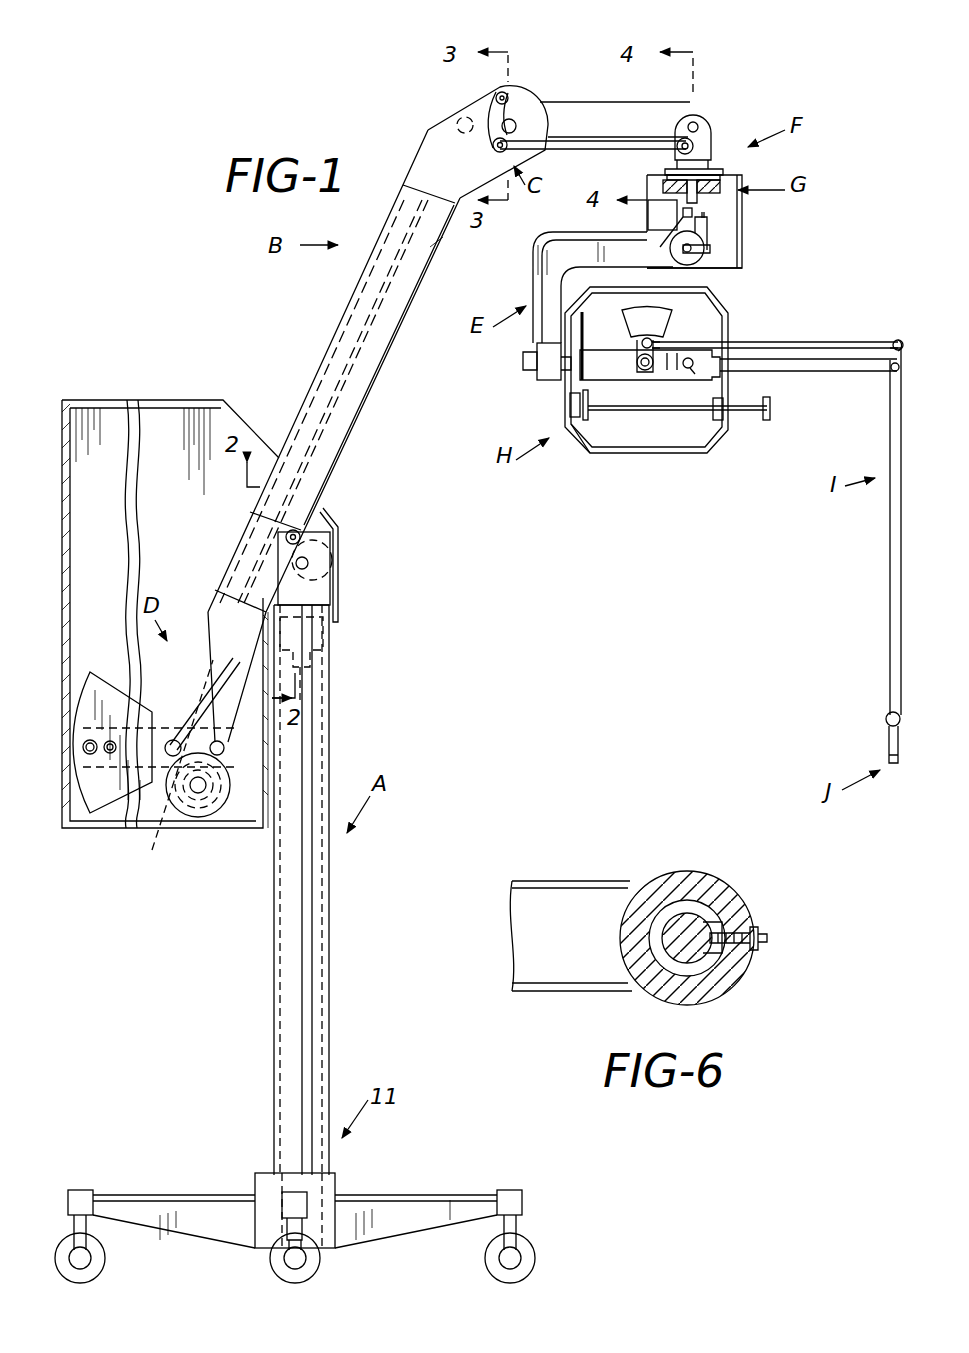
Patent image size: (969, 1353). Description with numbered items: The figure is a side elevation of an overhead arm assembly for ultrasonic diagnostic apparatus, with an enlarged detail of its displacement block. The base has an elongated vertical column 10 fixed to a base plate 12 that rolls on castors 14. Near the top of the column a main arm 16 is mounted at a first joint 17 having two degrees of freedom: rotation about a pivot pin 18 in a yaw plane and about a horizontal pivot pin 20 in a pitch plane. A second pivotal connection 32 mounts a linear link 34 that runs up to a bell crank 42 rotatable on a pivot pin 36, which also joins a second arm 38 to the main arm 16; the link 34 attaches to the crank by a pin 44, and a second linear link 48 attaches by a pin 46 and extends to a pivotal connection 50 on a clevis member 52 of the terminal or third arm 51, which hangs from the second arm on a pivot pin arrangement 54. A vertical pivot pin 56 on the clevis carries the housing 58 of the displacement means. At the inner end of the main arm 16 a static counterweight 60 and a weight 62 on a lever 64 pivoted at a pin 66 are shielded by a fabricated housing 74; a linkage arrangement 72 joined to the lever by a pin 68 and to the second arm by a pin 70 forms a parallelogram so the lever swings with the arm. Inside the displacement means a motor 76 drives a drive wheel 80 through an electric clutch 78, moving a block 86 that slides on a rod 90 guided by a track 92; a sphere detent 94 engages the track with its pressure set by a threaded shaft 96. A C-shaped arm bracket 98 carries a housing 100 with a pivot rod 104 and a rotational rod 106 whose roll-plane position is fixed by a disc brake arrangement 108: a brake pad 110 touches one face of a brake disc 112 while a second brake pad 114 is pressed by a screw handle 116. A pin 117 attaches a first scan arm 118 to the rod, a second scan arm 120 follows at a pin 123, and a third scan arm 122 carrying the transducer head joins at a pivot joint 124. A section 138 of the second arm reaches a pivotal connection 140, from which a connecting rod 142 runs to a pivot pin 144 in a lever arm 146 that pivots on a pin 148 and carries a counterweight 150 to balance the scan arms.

In FIG. 1, the vertical column 10 is at (318, 1065).
In FIG. 1, the base plate 12 is at (355, 1195).
In FIG. 1, the castors 14 is at (533, 1255).
In FIG. 1, the main arm 16 is at (340, 330).
In FIG. 1, the first joint 17 is at (340, 534).
In FIG. 1, the pivot pin 18 is at (343, 622).
In FIG. 1, the pivot pin 20 is at (308, 563).
In FIG. 1, the second pivotal connection 32 is at (286, 537).
In FIG. 1, the linear link 34 is at (443, 237).
In FIG. 1, the pivot pin 36 is at (514, 121).
In FIG. 1, the second arm 38 is at (593, 102).
In FIG. 1, the bell crank 42 is at (510, 96).
In FIG. 1, the pin 44 is at (496, 96).
In FIG. 1, the pin 46 is at (507, 145).
In FIG. 1, the linear link 48 is at (608, 141).
In FIG. 1, the pivotal connection 50 is at (678, 152).
In FIG. 1, the third arm 51 is at (719, 135).
In FIG. 1, the clevis member 52 is at (712, 128).
In FIG. 1, the pivot pin arrangement 54 is at (698, 124).
In FIG. 1, the pivot pin 56 is at (668, 182).
In FIG. 1, the housing 58 is at (742, 176).
In FIG. 1, the static counterweight 60 is at (205, 815).
In FIG. 1, the weight 62 is at (100, 800).
In FIG. 1, the lever 64 is at (174, 762).
In FIG. 1, the pin 66 is at (223, 755).
In FIG. 1, the pin 68 is at (171, 740).
In FIG. 1, the pin 70 is at (455, 124).
In FIG. 1, the linkage arrangement 72 is at (208, 688).
In FIG. 1, the fabricated housing 74 is at (150, 400).
In FIG. 1, the motor 76 is at (650, 216).
In FIG. 1, the electric clutch 78 is at (660, 238).
In FIG. 1, the drive wheel 80 is at (694, 212).
In FIG. 1, the block 86 is at (703, 256).
In FIG. 6, the block 86 is at (735, 975).
In FIG. 1, the rod 90 is at (692, 255).
In FIG. 6, the rod 90 is at (668, 920).
In FIG. 6, the track 92 is at (698, 928).
In FIG. 6, the detent 94 is at (730, 924).
In FIG. 1, the threaded shaft 96 is at (712, 249).
In FIG. 6, the threaded shaft 96 is at (740, 935).
In FIG. 1, the arm bracket 98 is at (550, 276).
In FIG. 6, the arm bracket 98 is at (560, 879).
In FIG. 1, the housing 100 is at (580, 441).
In FIG. 1, the pivot rod 104 is at (545, 370).
In FIG. 1, the rotational rod 106 is at (607, 380).
In FIG. 1, the disc brake arrangement 108 is at (585, 430).
In FIG. 1, the brake pad 110 is at (568, 406).
In FIG. 1, the brake disc 112 is at (584, 320).
In FIG. 1, the brake pad 114 is at (592, 412).
In FIG. 1, the screw handle 116 is at (771, 412).
In FIG. 1, the pin 117 is at (690, 372).
In FIG. 1, the first scan arm 118 is at (790, 373).
In FIG. 1, the second scan arm 120 is at (889, 525).
In FIG. 1, the third scan arm 122 is at (888, 745).
In FIG. 1, the pin 123 is at (893, 372).
In FIG. 1, the pivot joint 124 is at (885, 718).
In FIG. 1, the section 138 is at (905, 348).
In FIG. 1, the pivotal connection 140 is at (895, 340).
In FIG. 1, the connecting rod 142 is at (755, 342).
In FIG. 1, the pivot pin 144 is at (672, 345).
In FIG. 1, the lever arm 146 is at (641, 341).
In FIG. 1, the pin 148 is at (636, 362).
In FIG. 1, the counterweight 150 is at (647, 322).